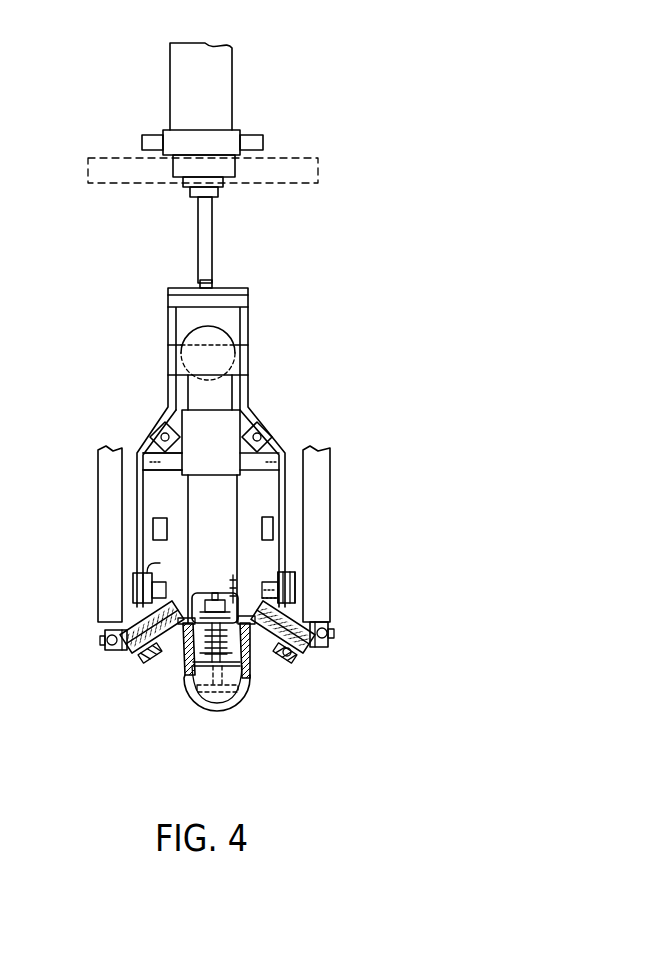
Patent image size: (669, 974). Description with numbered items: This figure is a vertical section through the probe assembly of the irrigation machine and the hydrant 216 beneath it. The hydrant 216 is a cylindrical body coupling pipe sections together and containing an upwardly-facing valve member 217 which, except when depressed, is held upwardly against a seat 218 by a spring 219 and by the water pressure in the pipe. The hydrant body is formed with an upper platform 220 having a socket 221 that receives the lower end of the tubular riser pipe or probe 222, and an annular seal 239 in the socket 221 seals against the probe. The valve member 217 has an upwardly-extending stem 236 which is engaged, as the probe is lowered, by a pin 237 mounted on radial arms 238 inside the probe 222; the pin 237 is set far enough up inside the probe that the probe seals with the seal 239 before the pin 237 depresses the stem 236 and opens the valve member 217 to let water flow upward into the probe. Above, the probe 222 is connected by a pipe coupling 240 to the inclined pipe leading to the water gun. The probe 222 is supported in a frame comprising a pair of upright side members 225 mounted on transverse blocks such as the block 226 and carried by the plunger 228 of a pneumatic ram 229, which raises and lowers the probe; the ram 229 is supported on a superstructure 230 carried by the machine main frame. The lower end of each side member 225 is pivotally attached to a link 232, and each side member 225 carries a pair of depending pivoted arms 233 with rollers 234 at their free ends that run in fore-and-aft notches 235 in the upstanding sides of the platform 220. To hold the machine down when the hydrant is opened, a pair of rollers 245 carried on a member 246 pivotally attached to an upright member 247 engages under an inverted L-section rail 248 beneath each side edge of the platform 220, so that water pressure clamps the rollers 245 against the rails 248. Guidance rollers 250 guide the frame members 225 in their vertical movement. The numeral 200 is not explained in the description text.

The pneumatic ram 229 is at (224, 90).
The superstructure 230 is at (318, 166).
The plunger 228 is at (205, 248).
The pipe coupling 240 is at (225, 390).
The upright side members 225 is at (150, 436).
The transverse block 226 is at (167, 461).
The riser pipe or probe 222 is at (200, 505).
The guidance rollers 250 is at (298, 484).
The fastener block 200 is at (152, 526).
The rollers 234 is at (296, 573).
The link 232 is at (130, 580).
The depending pivoted arms 233 is at (133, 560).
The notches 235 is at (296, 587).
The radial arms 238 is at (200, 596).
The pin 237 is at (225, 588).
The inverted L-section rail 248 is at (105, 623).
The upright member 247 is at (112, 650).
The rollers 245 is at (140, 658).
The member 246 is at (131, 653).
The upper platform 220 is at (177, 629).
The socket 221 is at (290, 655).
The annular seal 239 is at (254, 648).
The stem 236 is at (251, 666).
The seat 218 is at (246, 659).
The hydrant 216 is at (222, 698).
The spring 219 is at (198, 663).
The valve member 217 is at (203, 687).